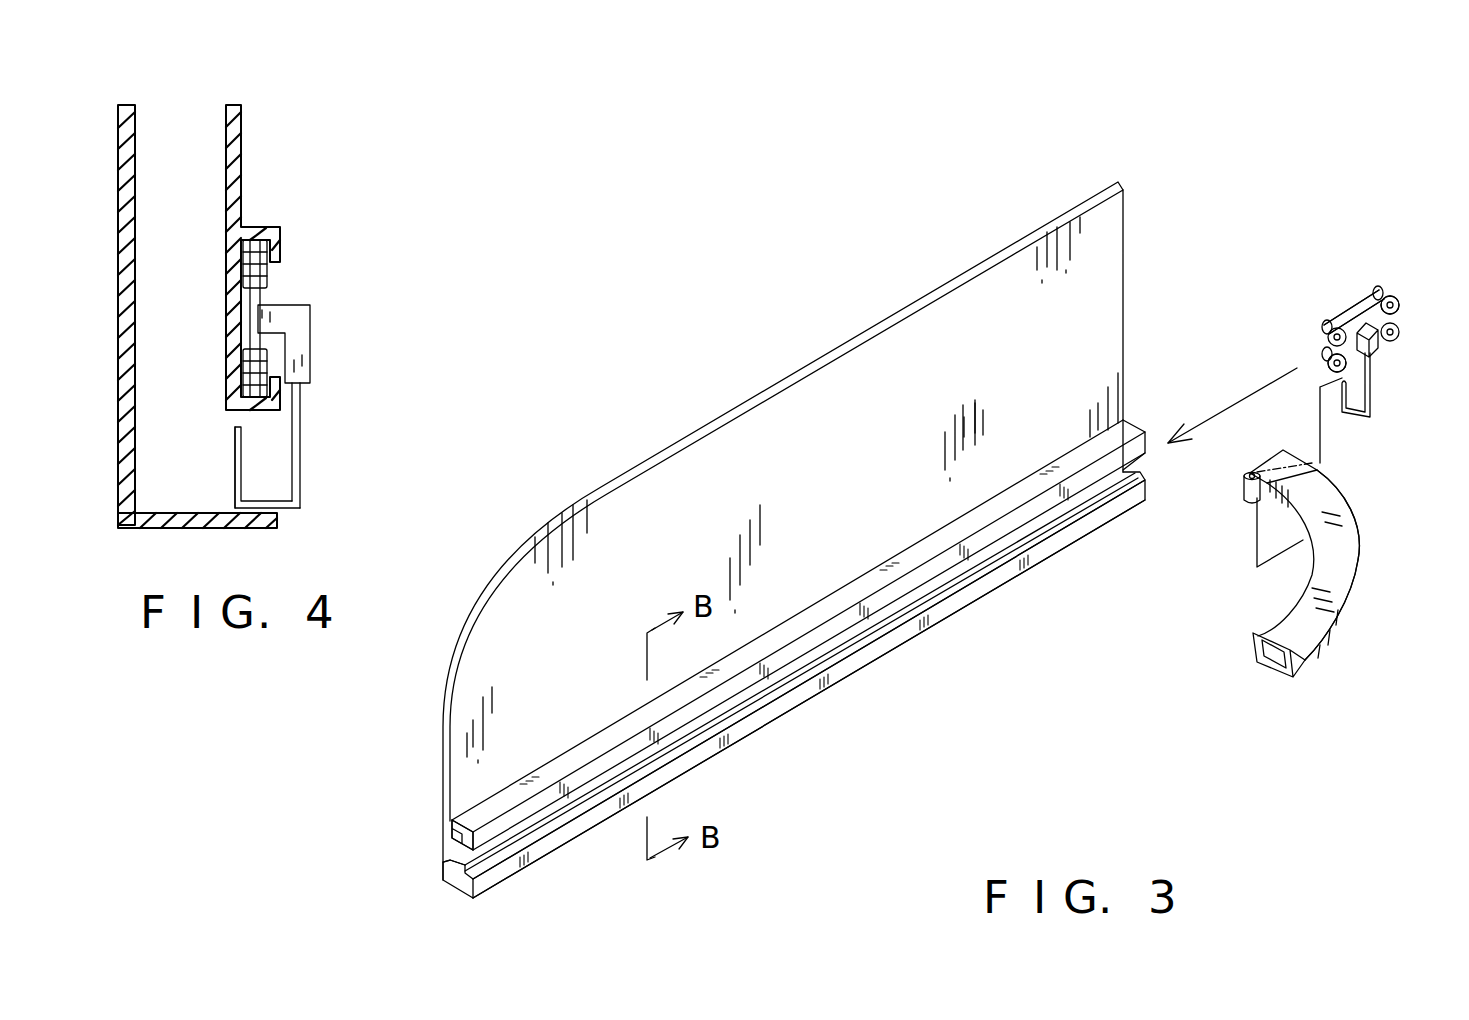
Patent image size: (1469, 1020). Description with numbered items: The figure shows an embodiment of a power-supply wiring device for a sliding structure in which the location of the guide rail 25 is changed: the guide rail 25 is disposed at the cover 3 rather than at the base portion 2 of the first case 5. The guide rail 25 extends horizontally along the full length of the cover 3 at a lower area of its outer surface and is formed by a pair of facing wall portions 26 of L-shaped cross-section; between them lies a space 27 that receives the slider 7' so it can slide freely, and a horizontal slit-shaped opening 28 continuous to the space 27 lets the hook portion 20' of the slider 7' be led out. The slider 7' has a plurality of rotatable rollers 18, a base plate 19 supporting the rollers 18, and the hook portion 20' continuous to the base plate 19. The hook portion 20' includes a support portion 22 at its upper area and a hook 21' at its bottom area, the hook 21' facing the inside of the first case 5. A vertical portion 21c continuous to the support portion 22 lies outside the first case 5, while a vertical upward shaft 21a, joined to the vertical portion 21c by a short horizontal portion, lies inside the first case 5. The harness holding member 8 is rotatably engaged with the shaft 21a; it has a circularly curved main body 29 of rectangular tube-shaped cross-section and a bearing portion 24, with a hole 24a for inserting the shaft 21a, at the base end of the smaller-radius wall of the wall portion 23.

In FIG. 4, the base portion 2 is at (135, 128).
In FIG. 4, the cover 3 is at (243, 130).
In FIG. 3, the cover 3 is at (720, 417).
In FIG. 4, the first case 5 is at (273, 41).
In FIG. 4, the slider 7' is at (308, 302).
In FIG. 3, the slider 7' is at (1358, 285).
In FIG. 3, the harness holding member 8 is at (1370, 601).
In FIG. 3, the rollers 18 is at (1327, 325).
In FIG. 3, the base plate 19 is at (1323, 350).
In FIG. 3, the hook portion 20' is at (1409, 367).
In FIG. 4, the vertical upward shaft 21a is at (236, 446).
In FIG. 3, the vertical upward shaft 21a is at (1337, 402).
In FIG. 4, the vertical portion 21c is at (300, 440).
In FIG. 4, the hook 21' is at (314, 476).
In FIG. 4, the support portion 22 is at (296, 342).
In FIG. 3, the wall portion 23 is at (1293, 513).
In FIG. 3, the bearing portion 24 is at (1245, 492).
In FIG. 3, the hole 24a is at (1250, 473).
In FIG. 3, the guide rail 25 is at (797, 700).
In FIG. 3, the wall portions 26 is at (903, 568).
In FIG. 3, the space 27 is at (443, 833).
In FIG. 3, the opening 28 is at (887, 613).
In FIG. 3, the main body 29 is at (1360, 547).